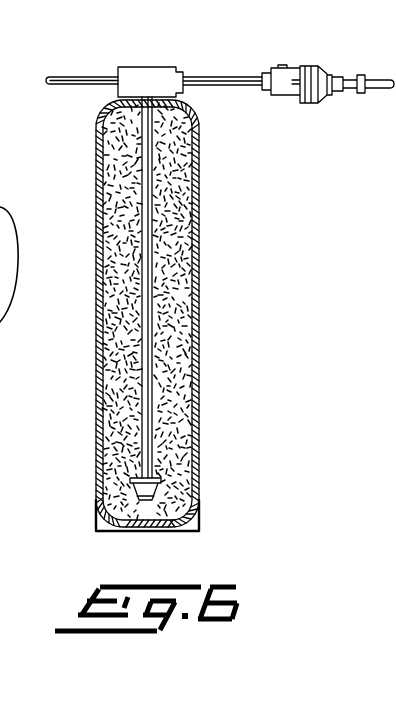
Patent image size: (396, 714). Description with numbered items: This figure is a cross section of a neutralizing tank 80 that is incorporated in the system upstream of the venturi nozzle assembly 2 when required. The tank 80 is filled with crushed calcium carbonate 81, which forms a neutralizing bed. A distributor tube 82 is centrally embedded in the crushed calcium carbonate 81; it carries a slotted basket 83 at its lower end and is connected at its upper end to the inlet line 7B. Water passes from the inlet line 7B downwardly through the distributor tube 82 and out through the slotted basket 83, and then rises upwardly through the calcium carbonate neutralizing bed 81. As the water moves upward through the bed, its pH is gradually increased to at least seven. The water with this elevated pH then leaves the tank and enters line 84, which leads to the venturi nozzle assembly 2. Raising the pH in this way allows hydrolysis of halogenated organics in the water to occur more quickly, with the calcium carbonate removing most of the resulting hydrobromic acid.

The venturi nozzle assembly 2 is at (295, 66).
The inlet line 7B is at (50, 76).
The neutralizing tank 80 is at (199, 413).
The crushed calcium carbonate 81 is at (170, 220).
The distributor tube 82 is at (149, 431).
The slotted basket 83 is at (157, 495).
The line 84 is at (223, 76).